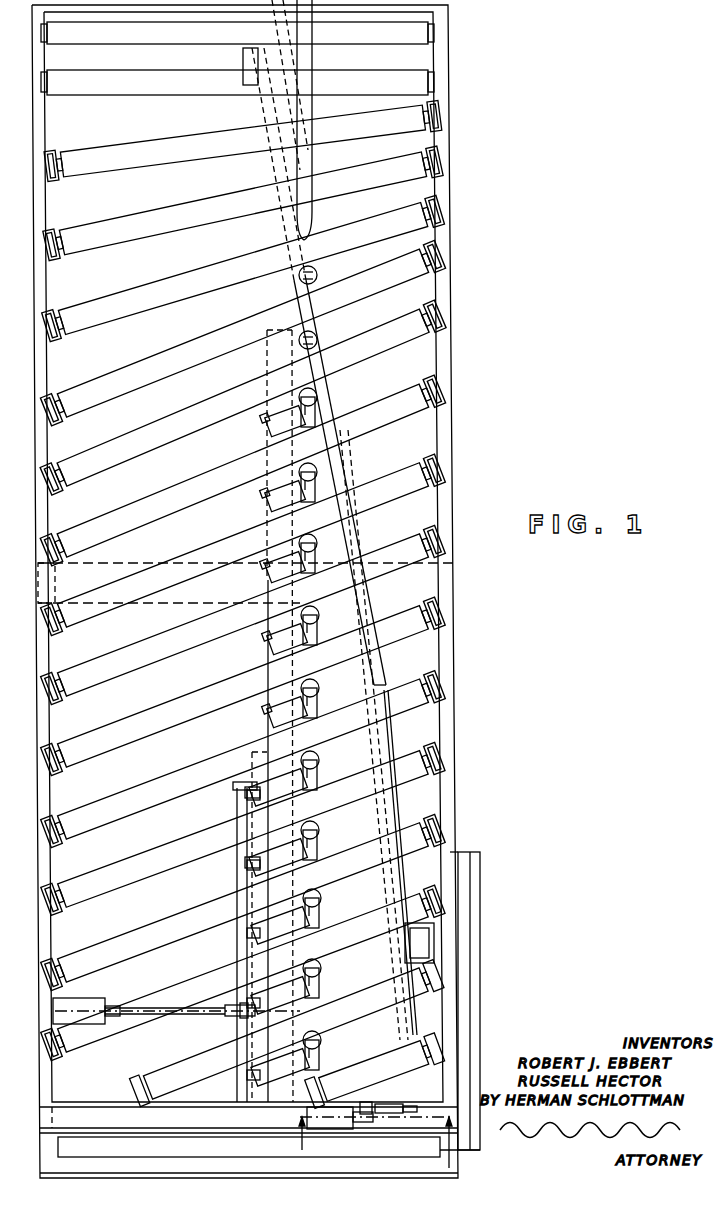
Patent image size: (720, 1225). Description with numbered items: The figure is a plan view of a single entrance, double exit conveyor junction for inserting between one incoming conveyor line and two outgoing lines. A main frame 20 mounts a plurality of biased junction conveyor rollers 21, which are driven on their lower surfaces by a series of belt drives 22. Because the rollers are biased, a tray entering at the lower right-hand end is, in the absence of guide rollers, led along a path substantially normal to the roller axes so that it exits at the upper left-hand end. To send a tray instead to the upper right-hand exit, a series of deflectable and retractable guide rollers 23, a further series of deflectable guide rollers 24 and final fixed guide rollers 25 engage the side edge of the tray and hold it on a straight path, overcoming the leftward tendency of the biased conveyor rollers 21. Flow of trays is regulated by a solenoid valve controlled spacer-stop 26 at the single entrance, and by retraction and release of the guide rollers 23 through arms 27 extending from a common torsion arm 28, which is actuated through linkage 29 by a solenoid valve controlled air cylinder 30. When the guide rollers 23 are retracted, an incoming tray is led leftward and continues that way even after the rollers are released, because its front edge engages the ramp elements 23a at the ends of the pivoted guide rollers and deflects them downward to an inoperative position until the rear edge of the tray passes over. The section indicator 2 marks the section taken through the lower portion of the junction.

The section line 2- 2 is at (375, 1145).
The main frame 20 is at (452, 780).
The biased junction conveyor rollers 21 is at (428, 548).
The belt drives 22 is at (385, 830).
The deflectable and retractable guide rollers 23 is at (321, 760).
The ramp elements 23a is at (248, 888).
The deflectable guide rollers 24 is at (320, 399).
The fixed guide rollers 25 is at (316, 280).
The spacer-stop 26 is at (372, 1103).
The arms 27 is at (250, 858).
The torsion arm 28 is at (236, 936).
The linkage 29 is at (222, 1016).
The air cylinder 30 is at (100, 1003).